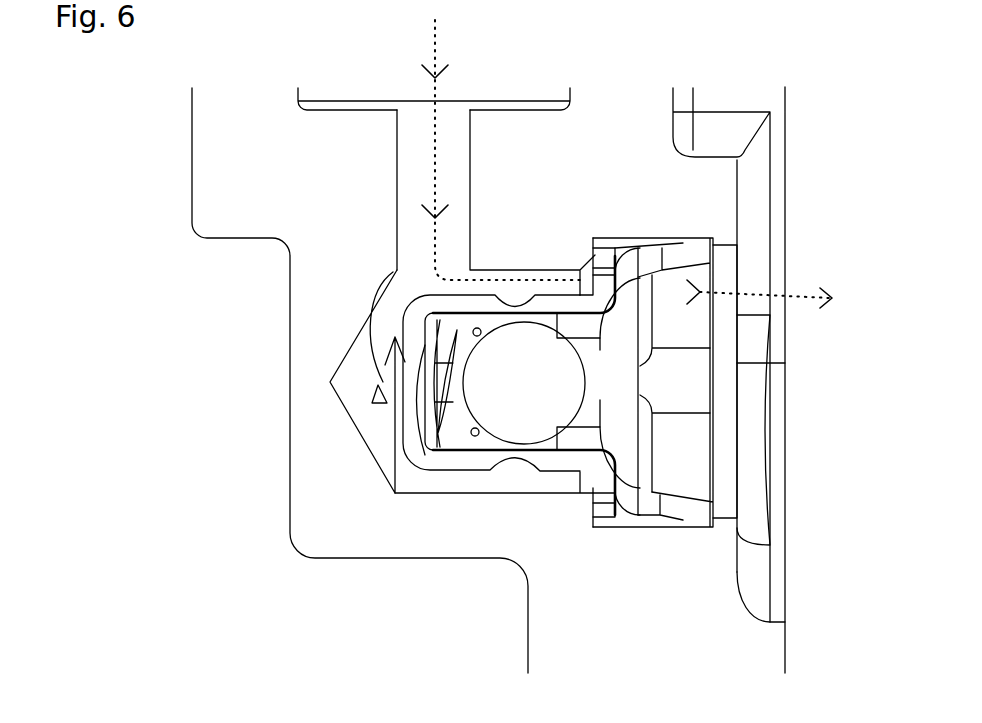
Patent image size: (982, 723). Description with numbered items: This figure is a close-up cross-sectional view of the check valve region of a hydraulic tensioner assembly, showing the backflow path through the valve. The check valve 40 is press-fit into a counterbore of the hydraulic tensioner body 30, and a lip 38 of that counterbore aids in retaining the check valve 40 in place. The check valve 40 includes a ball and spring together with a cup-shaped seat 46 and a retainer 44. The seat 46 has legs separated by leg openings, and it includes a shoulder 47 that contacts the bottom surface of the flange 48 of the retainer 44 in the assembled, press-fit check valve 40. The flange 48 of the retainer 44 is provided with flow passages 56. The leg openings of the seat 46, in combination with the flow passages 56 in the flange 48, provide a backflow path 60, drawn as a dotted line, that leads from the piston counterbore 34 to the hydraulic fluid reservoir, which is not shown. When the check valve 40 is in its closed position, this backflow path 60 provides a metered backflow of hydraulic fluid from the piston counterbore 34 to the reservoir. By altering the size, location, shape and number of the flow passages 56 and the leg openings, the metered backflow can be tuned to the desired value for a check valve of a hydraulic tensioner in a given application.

The hydraulic tensioner body 30 is at (254, 187).
The piston counterbore 34 is at (506, 94).
The lip 38 is at (727, 522).
The check valve 40 is at (360, 427).
The retainer 44 is at (450, 460).
The seat 46 is at (590, 437).
The shoulder 47 is at (621, 475).
The flange 48 is at (603, 253).
The flow passages 56 is at (603, 493).
The backflow path 60 is at (647, 163).